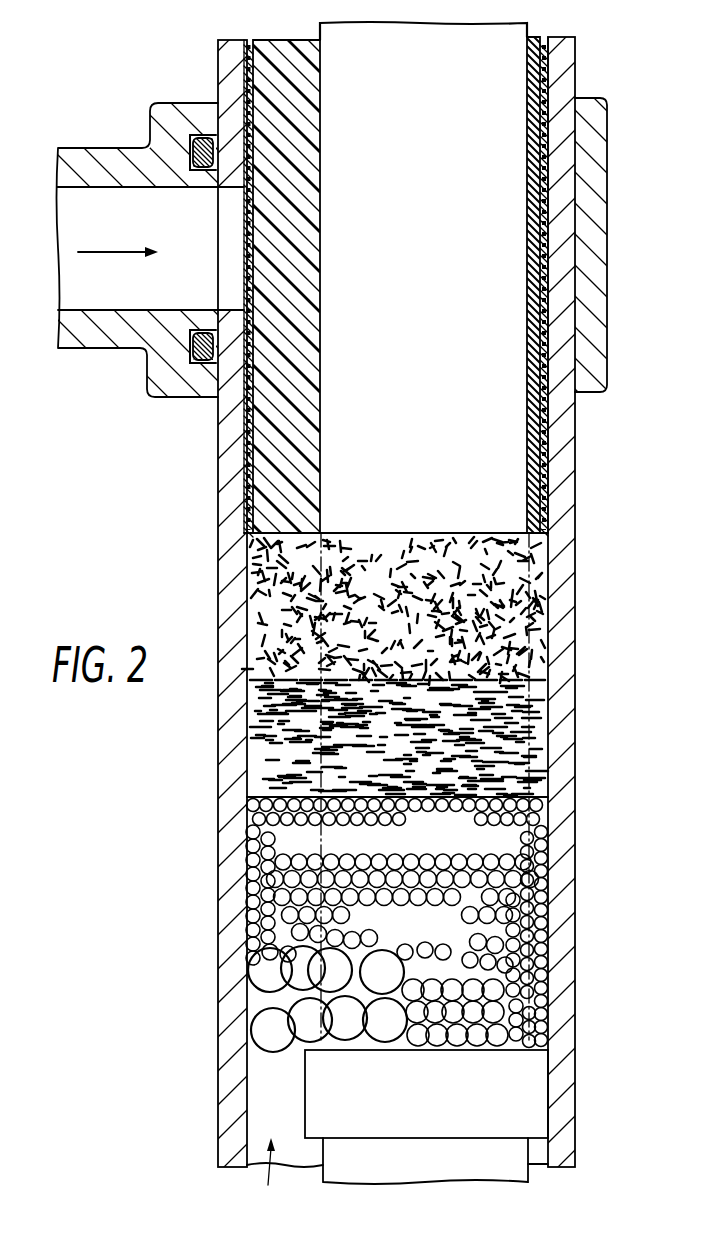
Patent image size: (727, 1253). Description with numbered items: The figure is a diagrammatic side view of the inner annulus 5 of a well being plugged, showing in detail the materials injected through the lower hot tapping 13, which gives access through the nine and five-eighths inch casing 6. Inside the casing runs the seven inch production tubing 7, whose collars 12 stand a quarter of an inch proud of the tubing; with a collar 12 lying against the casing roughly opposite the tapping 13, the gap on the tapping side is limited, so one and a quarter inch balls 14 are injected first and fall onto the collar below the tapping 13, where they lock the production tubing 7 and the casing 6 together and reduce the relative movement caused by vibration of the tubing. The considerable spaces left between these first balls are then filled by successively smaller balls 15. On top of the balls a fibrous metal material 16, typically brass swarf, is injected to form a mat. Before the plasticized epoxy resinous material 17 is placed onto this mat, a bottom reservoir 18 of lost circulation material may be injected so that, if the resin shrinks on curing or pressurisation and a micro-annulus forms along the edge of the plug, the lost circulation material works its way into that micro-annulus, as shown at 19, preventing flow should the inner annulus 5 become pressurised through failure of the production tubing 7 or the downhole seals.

The inner annulus 5 is at (268, 1176).
The casing 6 is at (220, 1110).
The production tubing 7 is at (323, 1165).
The collar 12 is at (533, 1097).
The lower hot tapping 13 is at (228, 308).
The balls 14 is at (248, 1002).
The smaller balls 15 is at (520, 960).
The fibrous metal material 16 is at (545, 725).
The plasticized epoxy resinous material 17 is at (293, 44).
The bottom reservoir of lost circulation material 18 is at (545, 600).
The lost circulation material in micro-annulus 19 is at (244, 79).